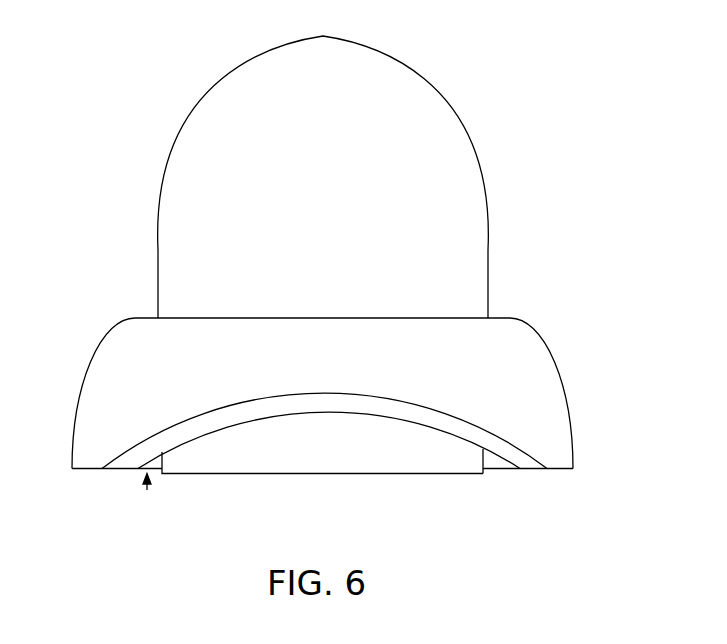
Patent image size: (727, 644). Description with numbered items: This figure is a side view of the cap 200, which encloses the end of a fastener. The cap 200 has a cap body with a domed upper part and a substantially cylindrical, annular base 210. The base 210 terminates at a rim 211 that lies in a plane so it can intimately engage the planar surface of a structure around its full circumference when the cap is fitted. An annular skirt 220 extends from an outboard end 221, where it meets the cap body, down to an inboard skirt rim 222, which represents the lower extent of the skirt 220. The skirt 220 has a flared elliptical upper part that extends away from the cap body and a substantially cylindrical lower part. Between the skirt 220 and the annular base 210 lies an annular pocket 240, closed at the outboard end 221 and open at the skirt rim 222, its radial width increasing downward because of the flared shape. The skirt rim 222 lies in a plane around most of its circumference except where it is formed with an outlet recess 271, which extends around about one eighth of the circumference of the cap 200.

The cap 200 is at (438, 114).
The annular skirt 220 is at (552, 407).
The outboard end 221 is at (503, 327).
The skirt rim 222 is at (90, 470).
The outlet recess 271 is at (182, 427).
The base 210 is at (273, 460).
The rim 211 is at (463, 476).
The annular pocket 240 is at (147, 490).